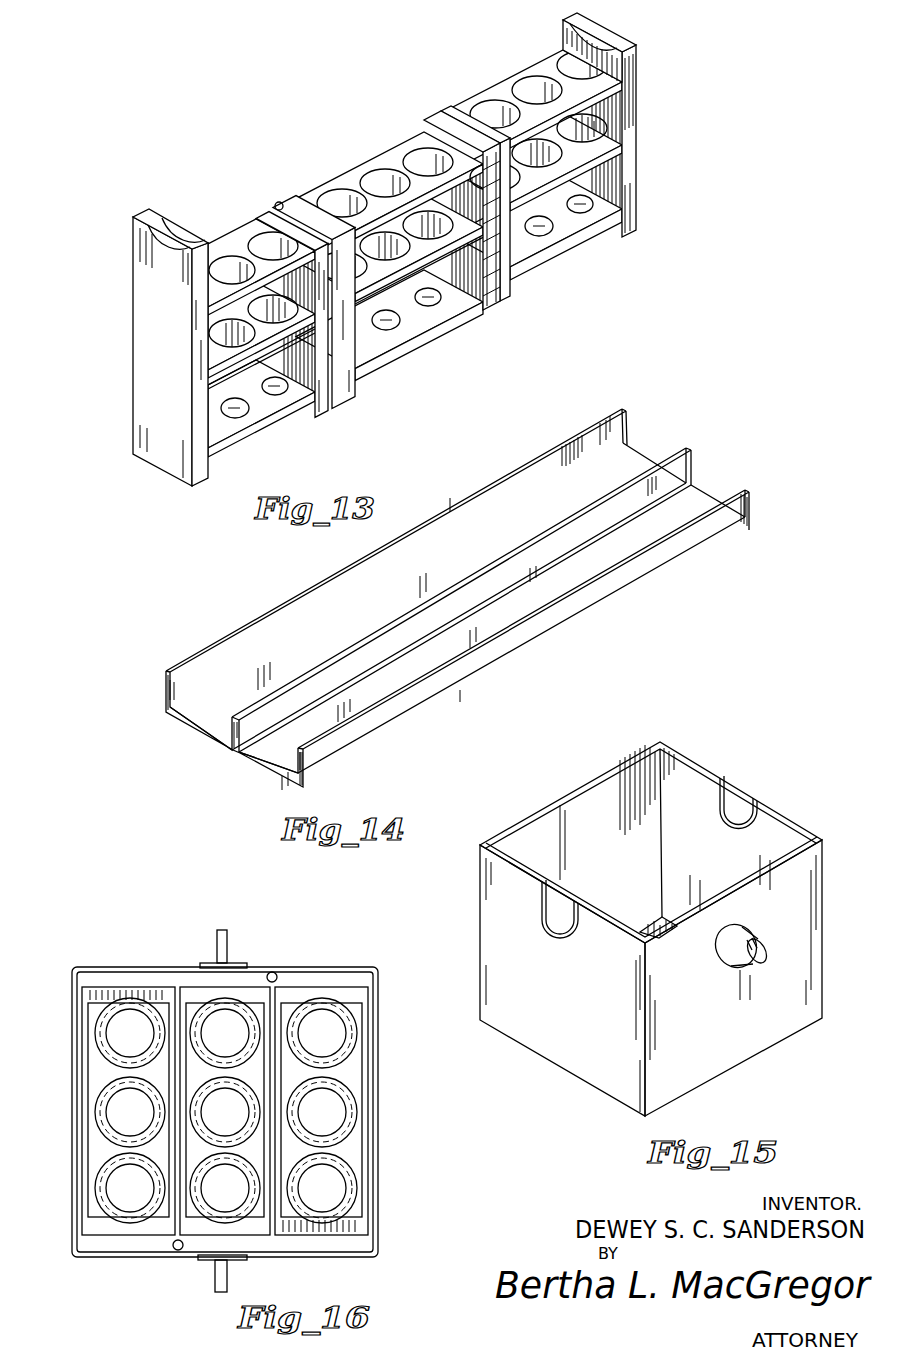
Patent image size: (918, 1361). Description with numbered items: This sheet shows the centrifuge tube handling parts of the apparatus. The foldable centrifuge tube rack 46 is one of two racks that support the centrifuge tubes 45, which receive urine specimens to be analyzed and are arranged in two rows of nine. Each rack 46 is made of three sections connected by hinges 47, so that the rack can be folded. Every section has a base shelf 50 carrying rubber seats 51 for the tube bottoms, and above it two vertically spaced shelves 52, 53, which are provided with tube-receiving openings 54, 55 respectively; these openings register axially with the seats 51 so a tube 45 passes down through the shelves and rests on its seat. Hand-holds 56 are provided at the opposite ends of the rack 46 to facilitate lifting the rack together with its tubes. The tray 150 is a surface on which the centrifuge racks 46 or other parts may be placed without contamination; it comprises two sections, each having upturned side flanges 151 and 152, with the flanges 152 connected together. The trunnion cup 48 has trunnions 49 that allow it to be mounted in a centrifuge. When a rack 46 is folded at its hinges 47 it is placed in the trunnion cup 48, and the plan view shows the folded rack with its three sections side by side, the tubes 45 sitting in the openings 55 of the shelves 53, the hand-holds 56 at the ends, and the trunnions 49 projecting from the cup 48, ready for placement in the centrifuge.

In FIG. 16, the centrifuge tubes 45 is at (110, 1030).
In FIG. 13, the rack 46 is at (368, 249).
In FIG. 16, the rack 46 is at (237, 1108).
In FIG. 13, the hinges 47 is at (278, 202).
In FIG. 16, the hinges 47 is at (273, 972).
In FIG. 15, the trunnion cup 48 is at (776, 806).
In FIG. 16, the trunnion cup 48 is at (384, 1048).
In FIG. 15, the trunnions 49 is at (752, 941).
In FIG. 16, the trunnions 49 is at (218, 940).
In FIG. 13, the base shelf 50 is at (590, 228).
In FIG. 13, the rubber seats 51 is at (592, 209).
In FIG. 13, the shelf 52 is at (618, 157).
In FIG. 13, the shelf 53 is at (616, 84).
In FIG. 16, the shelf 53 is at (197, 995).
In FIG. 13, the tube-receiving openings 54 is at (616, 126).
In FIG. 13, the tube-receiving openings 55 is at (625, 45).
In FIG. 16, the tube-receiving openings 55 is at (95, 1095).
In FIG. 13, the hand-holds 56 is at (131, 222).
In FIG. 16, the hand-holds 56 is at (125, 988).
In FIG. 14, the tray 150 is at (484, 599).
In FIG. 14, the upturned side flanges 151 is at (212, 648).
In FIG. 14, the upturned side flanges 152 is at (230, 722).